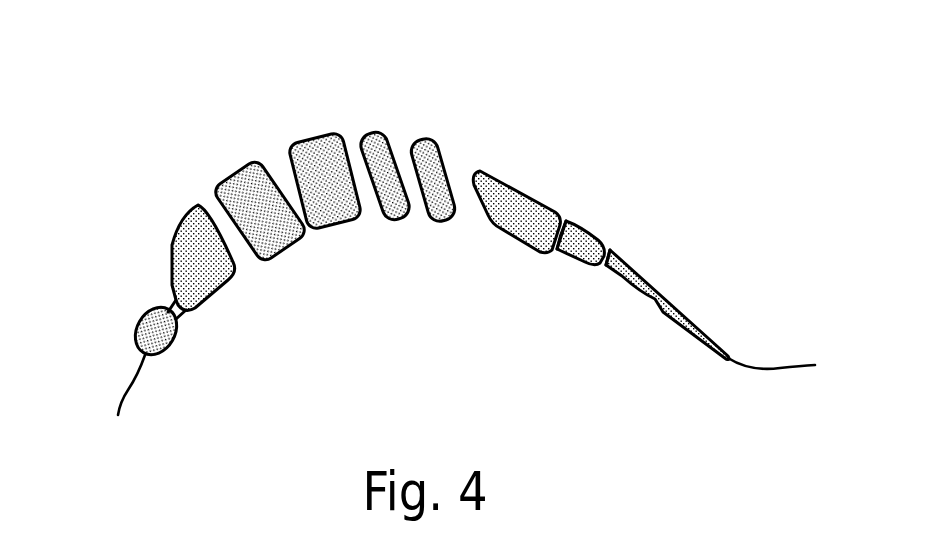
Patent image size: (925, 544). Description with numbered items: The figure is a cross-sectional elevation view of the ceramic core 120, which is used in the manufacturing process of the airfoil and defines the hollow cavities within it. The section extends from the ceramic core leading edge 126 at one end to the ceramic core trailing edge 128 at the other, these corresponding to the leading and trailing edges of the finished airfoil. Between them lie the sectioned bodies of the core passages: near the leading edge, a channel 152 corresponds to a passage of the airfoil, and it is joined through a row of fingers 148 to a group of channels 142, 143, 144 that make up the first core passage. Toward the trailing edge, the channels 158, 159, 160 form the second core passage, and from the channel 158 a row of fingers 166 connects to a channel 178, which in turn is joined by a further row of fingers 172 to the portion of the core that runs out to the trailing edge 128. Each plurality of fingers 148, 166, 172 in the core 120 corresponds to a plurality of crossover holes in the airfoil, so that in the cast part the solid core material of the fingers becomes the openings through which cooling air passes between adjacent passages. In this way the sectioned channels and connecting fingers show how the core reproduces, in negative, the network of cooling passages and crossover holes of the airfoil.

The ceramic core 120 is at (664, 120).
The ceramic core leading edge 126 is at (119, 404).
The ceramic core trailing edge 128 is at (737, 316).
The channel 142 is at (288, 142).
The channel 143 is at (240, 166).
The channel 144 is at (172, 246).
The fingers 148 is at (185, 320).
The channel 152 is at (140, 321).
The channel 158 is at (537, 195).
The channel 159 is at (425, 140).
The channel 160 is at (365, 134).
The fingers 166 is at (560, 240).
The fingers 172 is at (603, 258).
The channel 178 is at (587, 233).